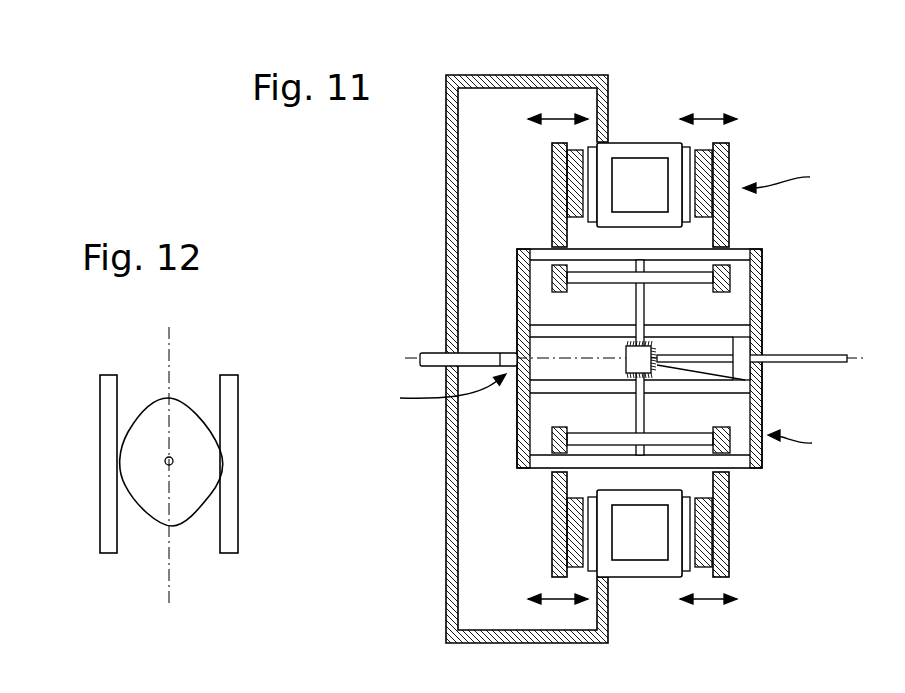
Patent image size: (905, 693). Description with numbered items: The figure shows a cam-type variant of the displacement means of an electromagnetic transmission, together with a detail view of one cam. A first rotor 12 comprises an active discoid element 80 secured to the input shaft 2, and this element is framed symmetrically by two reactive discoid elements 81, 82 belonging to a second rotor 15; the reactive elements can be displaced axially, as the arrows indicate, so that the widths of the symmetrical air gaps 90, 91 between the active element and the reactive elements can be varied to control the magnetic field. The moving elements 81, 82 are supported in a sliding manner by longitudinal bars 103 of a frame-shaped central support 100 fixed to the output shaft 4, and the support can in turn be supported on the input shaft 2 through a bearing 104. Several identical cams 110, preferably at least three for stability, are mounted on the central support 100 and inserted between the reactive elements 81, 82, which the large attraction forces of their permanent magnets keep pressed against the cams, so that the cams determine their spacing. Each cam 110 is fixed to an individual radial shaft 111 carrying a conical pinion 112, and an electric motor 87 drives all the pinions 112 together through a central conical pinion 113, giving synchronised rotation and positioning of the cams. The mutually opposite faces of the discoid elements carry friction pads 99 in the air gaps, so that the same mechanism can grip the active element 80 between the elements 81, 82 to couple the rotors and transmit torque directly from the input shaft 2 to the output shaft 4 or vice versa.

In FIG. 11, the input shaft 2 is at (414, 352).
In FIG. 11, the output shaft 4 is at (856, 355).
In FIG. 11, the first rotor 12 is at (489, 62).
In FIG. 11, the second rotor 15 is at (791, 175).
In FIG. 11, the active discoid element 80 is at (634, 152).
In FIG. 11, the reactive discoid element 81 is at (560, 165).
In FIG. 12, the reactive discoid element 81 is at (108, 402).
In FIG. 11, the reactive discoid element 82 is at (728, 163).
In FIG. 12, the reactive discoid element 82 is at (230, 402).
In FIG. 11, the electric motor 87 is at (745, 348).
In FIG. 11, the air gap 90 is at (593, 153).
In FIG. 11, the air gap 91 is at (690, 163).
In FIG. 11, the friction pads 99 is at (578, 556).
In FIG. 11, the central support 100 is at (813, 443).
In FIG. 11, the longitudinal bars 103 is at (740, 472).
In FIG. 11, the bearing 104 is at (426, 393).
In FIG. 11, the cam 110 is at (790, 477).
In FIG. 12, the cam 110 is at (205, 488).
In FIG. 11, the radial shaft 111 is at (636, 310).
In FIG. 12, the radial shaft 111 is at (165, 461).
In FIG. 11, the conical pinion 112 is at (622, 347).
In FIG. 11, the central conical pinion 113 is at (745, 380).